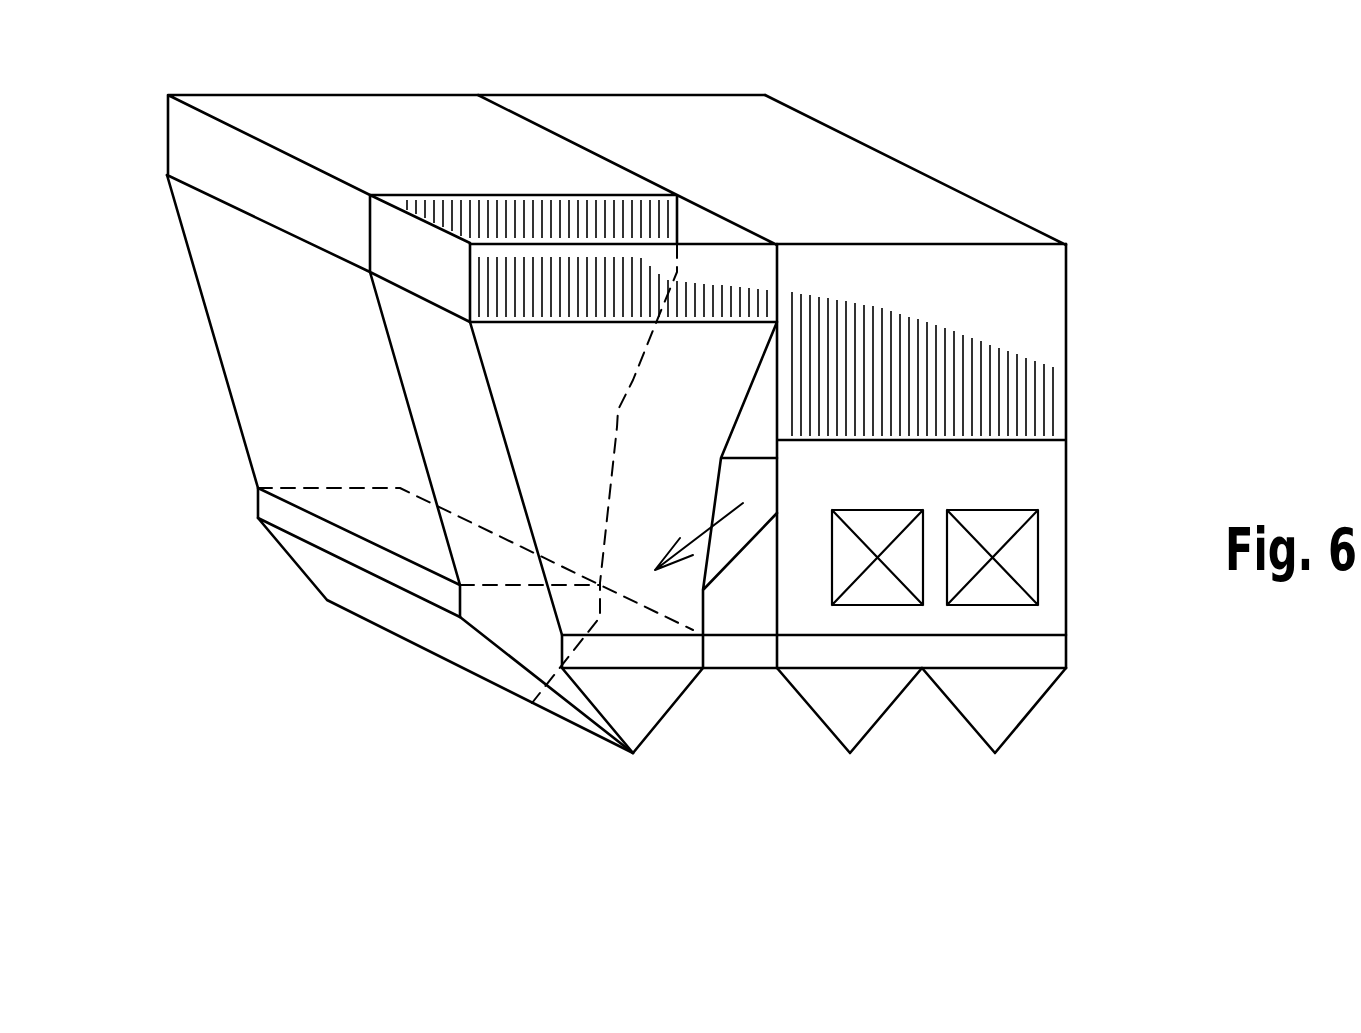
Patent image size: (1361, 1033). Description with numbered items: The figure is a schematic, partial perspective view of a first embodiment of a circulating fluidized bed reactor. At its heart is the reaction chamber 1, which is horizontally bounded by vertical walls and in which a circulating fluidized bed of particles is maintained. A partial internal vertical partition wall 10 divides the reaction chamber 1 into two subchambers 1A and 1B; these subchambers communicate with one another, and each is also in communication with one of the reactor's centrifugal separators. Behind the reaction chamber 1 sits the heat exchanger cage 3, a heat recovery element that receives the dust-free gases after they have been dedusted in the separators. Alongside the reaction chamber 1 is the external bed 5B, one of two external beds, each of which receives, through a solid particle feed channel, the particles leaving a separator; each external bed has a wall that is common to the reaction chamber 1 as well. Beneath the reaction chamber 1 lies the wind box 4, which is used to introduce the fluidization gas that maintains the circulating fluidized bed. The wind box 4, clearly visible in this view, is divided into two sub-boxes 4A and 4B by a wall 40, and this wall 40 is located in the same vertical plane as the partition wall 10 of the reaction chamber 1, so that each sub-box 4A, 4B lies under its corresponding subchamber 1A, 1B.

The reaction chamber 1 is at (158, 263).
The subchamber 1A is at (429, 481).
The subchamber 1B is at (623, 473).
The heat exchanger cage 3 is at (951, 224).
The partial internal vertical partition wall 10 is at (437, 420).
The external bed 5B is at (990, 473).
The wind box 4 is at (310, 585).
The sub-box 4A is at (445, 620).
The sub-box 4B is at (814, 694).
The wall 40 is at (518, 660).